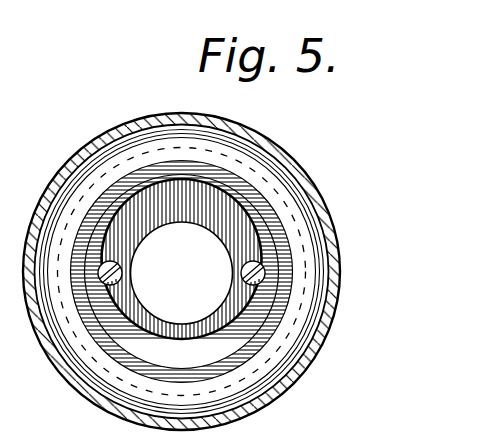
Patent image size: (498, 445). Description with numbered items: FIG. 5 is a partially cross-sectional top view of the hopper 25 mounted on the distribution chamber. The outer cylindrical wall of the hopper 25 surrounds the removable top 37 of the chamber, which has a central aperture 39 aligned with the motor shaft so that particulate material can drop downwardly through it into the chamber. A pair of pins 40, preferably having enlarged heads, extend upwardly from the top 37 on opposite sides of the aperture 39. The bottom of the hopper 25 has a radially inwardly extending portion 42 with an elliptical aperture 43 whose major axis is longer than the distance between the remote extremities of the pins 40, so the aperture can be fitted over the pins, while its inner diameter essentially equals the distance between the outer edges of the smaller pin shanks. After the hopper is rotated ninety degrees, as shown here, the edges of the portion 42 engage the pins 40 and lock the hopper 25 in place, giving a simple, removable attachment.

The hopper 25 is at (258, 135).
The top of the chamber 37 is at (226, 327).
The central aperture 39 is at (140, 234).
The pins 40 is at (110, 290).
The radially inwardly extending portion 42 is at (257, 209).
The elliptical aperture 43 is at (138, 198).